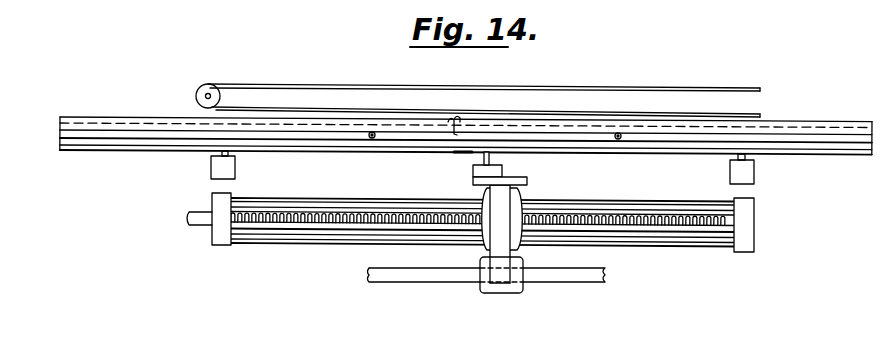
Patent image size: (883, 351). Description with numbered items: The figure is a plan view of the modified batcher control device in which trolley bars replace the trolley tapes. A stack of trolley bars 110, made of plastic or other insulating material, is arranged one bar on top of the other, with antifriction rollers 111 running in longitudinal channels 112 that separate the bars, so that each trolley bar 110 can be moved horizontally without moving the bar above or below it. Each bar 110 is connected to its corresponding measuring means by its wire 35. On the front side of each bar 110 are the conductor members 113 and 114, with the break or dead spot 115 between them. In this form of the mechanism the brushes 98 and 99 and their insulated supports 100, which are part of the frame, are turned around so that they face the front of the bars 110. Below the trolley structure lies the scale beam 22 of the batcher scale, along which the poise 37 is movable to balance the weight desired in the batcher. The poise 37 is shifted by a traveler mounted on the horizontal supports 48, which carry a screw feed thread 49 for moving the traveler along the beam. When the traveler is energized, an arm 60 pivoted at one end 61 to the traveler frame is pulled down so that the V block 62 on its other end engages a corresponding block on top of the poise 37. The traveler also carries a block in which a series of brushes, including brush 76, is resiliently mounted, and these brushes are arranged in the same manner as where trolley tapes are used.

The scale beam 22 is at (573, 282).
The wire 35 is at (622, 90).
The poise 37 is at (488, 296).
The horizontal supports 48 is at (640, 205).
The screw feed thread 49 is at (670, 236).
The arm 60 is at (487, 230).
The pivot end 61 is at (523, 188).
The V block 62 is at (503, 292).
The brush 76 is at (490, 156).
The brush 98 is at (212, 158).
The brush 99 is at (760, 156).
The insulated blocks 100 is at (211, 172).
The trolley bars 110 is at (123, 117).
The antifriction rollers 111 is at (371, 139).
The longitudinal channels 112 is at (130, 133).
The conductor member 113 is at (378, 158).
The conductor member 114 is at (647, 156).
The break or dead spot 115 is at (465, 154).